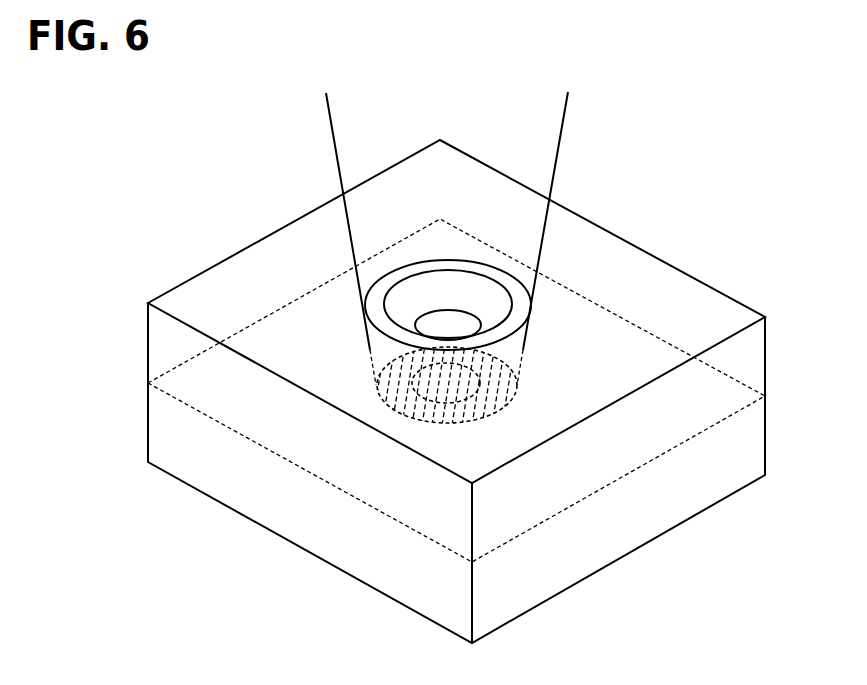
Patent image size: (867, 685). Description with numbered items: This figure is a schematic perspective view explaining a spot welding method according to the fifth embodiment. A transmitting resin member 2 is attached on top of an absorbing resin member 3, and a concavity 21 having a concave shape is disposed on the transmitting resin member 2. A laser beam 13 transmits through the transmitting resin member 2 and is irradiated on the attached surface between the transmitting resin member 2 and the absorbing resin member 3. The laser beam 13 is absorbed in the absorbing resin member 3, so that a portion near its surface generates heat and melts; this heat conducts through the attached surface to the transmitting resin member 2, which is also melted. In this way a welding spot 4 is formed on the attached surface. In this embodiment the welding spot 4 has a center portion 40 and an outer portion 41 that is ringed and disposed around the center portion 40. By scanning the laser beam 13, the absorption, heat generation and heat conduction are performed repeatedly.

The transmitting resin member 2 is at (193, 305).
The absorbing resin member 3 is at (193, 457).
The laser beam 13 is at (340, 175).
The concavity 21 is at (447, 325).
The welding spot 4 is at (451, 398).
The center portion 40 is at (460, 356).
The outer portion 41 is at (380, 357).